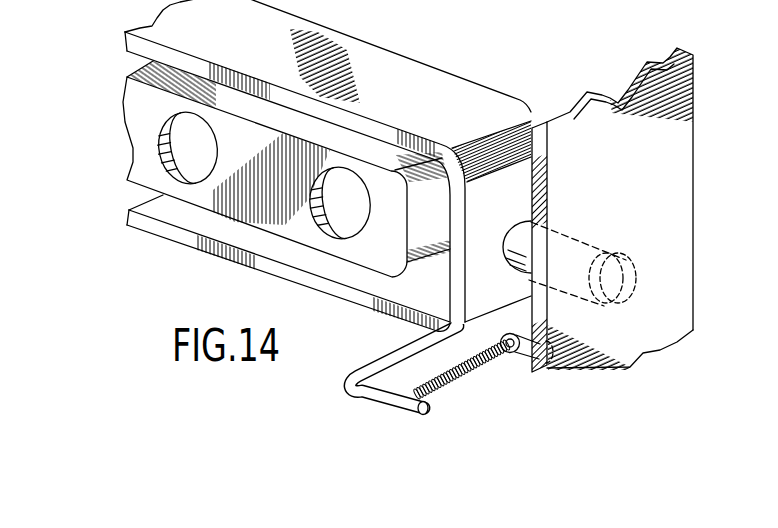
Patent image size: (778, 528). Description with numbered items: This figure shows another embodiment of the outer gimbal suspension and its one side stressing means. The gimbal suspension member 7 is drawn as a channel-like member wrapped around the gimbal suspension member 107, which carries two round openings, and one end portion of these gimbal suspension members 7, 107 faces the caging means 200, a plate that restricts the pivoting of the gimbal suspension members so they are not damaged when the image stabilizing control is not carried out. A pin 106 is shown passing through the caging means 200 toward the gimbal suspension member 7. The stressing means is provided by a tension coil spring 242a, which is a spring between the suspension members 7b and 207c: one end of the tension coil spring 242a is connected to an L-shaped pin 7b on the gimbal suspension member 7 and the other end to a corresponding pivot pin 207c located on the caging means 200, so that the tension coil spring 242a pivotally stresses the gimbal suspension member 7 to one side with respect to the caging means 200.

The gimbal suspension member 7 is at (421, 109).
The L-shaped pin 7b is at (381, 397).
The gimbal suspension member 107 is at (138, 114).
The caging means 200 is at (670, 164).
The cylindrical pin 106 is at (588, 251).
The tension coil spring 242a is at (453, 391).
The pivot pin 207c is at (513, 356).